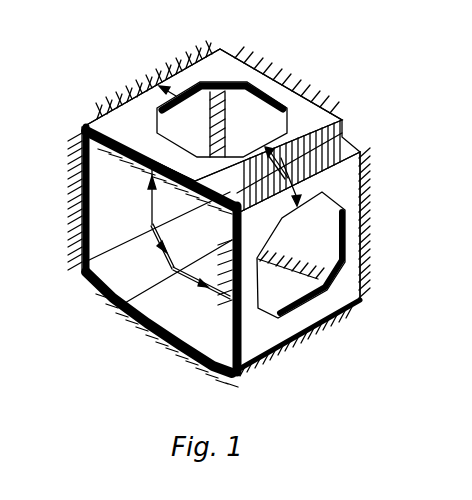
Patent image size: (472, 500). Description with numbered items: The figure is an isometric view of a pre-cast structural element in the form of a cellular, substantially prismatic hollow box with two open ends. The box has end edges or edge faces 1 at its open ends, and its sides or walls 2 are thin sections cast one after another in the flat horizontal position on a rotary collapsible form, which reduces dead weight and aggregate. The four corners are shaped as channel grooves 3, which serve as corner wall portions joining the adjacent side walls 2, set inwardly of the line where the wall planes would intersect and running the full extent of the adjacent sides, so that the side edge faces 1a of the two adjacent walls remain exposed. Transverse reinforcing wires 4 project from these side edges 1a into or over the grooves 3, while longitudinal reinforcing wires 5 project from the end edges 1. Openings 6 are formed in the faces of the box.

The end edges 1 is at (215, 211).
The side edges 1a is at (322, 160).
The sides or walls 2 is at (134, 106).
The channel grooves 3 is at (88, 122).
The transverse reinforcing wires 4 is at (196, 56).
The longitudinal reinforcing wires 5 is at (74, 174).
The openings 6 is at (270, 128).